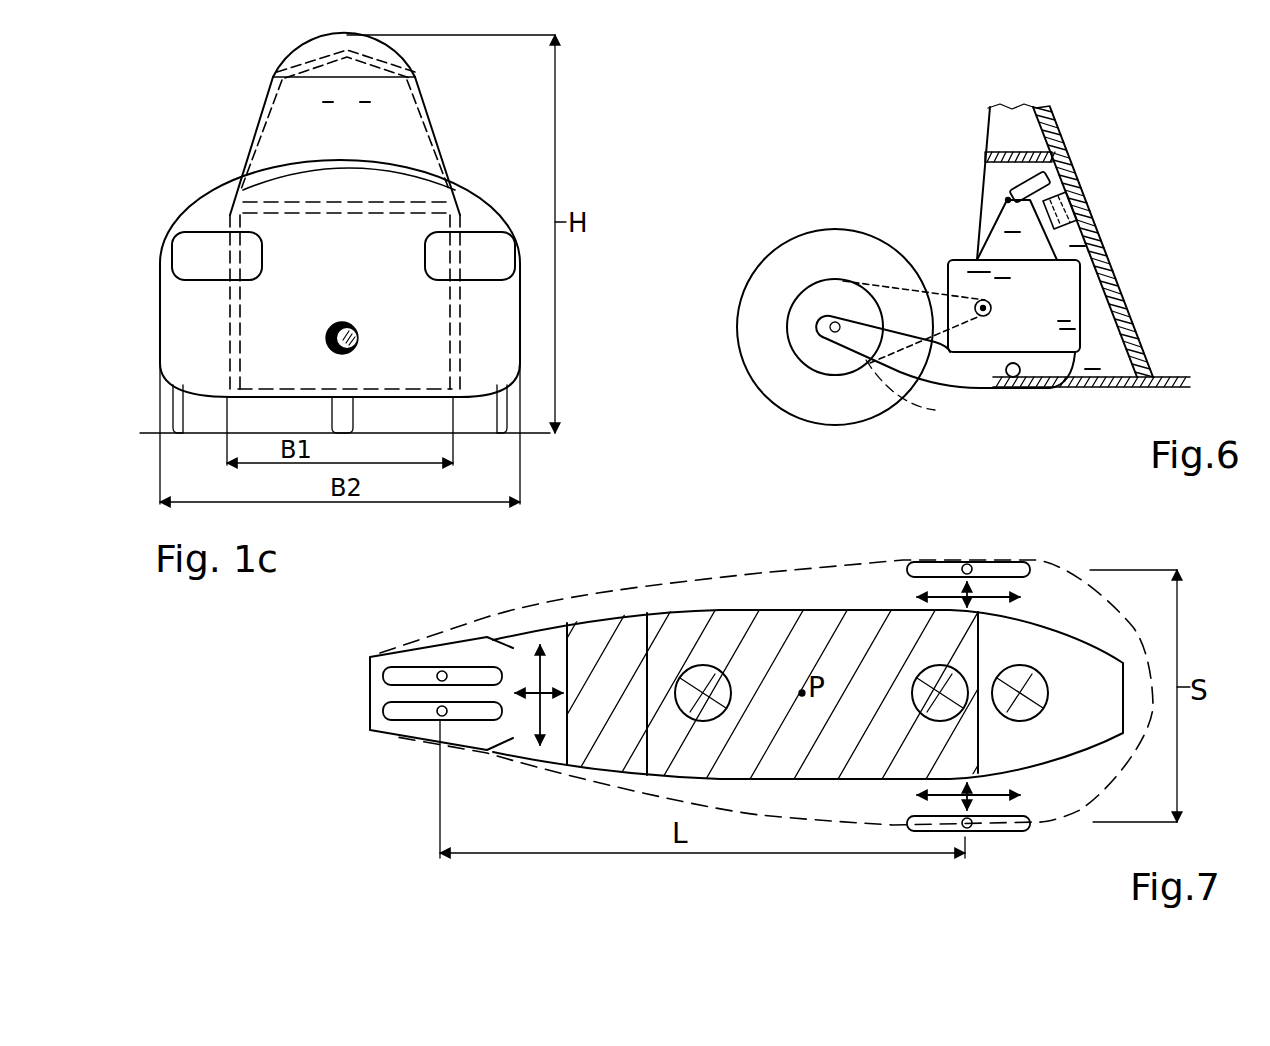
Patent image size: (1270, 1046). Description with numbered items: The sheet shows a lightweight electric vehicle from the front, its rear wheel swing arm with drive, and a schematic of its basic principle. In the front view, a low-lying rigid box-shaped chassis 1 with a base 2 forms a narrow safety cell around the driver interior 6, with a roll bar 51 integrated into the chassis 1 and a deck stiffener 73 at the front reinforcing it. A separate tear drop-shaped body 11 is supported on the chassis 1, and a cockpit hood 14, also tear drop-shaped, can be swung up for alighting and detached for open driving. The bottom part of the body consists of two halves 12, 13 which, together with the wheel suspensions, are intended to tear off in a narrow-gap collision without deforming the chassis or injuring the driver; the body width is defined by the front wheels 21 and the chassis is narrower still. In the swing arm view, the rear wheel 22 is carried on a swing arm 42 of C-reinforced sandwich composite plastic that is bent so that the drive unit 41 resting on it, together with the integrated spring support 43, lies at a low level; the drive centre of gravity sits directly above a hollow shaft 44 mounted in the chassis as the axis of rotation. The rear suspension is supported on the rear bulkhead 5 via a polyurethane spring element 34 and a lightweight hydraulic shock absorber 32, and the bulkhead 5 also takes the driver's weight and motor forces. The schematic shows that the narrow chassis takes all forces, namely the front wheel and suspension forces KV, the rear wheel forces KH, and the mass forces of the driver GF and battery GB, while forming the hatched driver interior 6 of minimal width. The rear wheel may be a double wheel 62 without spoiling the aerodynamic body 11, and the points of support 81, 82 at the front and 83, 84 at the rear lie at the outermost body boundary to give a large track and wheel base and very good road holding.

In FIG. 7, the chassis 1 is at (764, 580).
In FIG. 6, the base 2 is at (1087, 388).
In FIG. 6, the rear bulkhead 5 is at (1057, 137).
In FIG. 1C, the driver interior 6 is at (353, 282).
In FIG. 7, the driver interior 6 is at (848, 693).
In FIG. 1C, the body 11 is at (480, 202).
In FIG. 7, the body 11 is at (370, 730).
In FIG. 1C, the body bottom half 12 is at (160, 305).
In FIG. 1C, the body bottom half 13 is at (527, 300).
In FIG. 1C, the cockpit hood 14 is at (430, 107).
In FIG. 7, the front wheels 21 is at (1017, 830).
In FIG. 6, the rear wheel 22 is at (783, 243).
In FIG. 6, the hydraulic shock absorber 32 is at (1013, 190).
In FIG. 6, the polyurethane spring element 34 is at (1057, 207).
In FIG. 6, the drive unit 41 is at (1047, 283).
In FIG. 6, the swing arm 42 is at (958, 388).
In FIG. 6, the spring support 43 is at (1000, 235).
In FIG. 6, the hollow shaft 44 is at (1010, 377).
In FIG. 1C, the roll bar 51 is at (257, 118).
In FIG. 7, the double wheel 62 is at (380, 713).
In FIG. 1C, the deck stiffener 73 is at (327, 207).
In FIG. 7, the front point of support 81 is at (968, 829).
In FIG. 7, the front point of support 82 is at (973, 563).
In FIG. 7, the rear point of support 83 is at (442, 671).
In FIG. 7, the rear point of support 84 is at (440, 717).
In FIG. 7, the rear wheel forces KH is at (535, 653).
In FIG. 7, the front wheel and suspension forces KV is at (967, 593).
In FIG. 7, the driver mass force GF is at (700, 690).
In FIG. 7, the battery mass force GB is at (1018, 690).